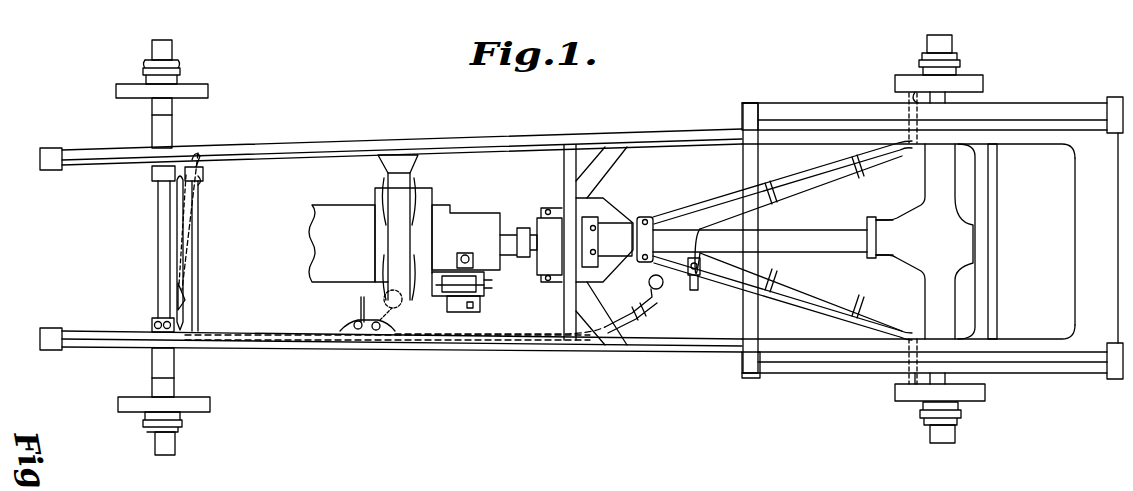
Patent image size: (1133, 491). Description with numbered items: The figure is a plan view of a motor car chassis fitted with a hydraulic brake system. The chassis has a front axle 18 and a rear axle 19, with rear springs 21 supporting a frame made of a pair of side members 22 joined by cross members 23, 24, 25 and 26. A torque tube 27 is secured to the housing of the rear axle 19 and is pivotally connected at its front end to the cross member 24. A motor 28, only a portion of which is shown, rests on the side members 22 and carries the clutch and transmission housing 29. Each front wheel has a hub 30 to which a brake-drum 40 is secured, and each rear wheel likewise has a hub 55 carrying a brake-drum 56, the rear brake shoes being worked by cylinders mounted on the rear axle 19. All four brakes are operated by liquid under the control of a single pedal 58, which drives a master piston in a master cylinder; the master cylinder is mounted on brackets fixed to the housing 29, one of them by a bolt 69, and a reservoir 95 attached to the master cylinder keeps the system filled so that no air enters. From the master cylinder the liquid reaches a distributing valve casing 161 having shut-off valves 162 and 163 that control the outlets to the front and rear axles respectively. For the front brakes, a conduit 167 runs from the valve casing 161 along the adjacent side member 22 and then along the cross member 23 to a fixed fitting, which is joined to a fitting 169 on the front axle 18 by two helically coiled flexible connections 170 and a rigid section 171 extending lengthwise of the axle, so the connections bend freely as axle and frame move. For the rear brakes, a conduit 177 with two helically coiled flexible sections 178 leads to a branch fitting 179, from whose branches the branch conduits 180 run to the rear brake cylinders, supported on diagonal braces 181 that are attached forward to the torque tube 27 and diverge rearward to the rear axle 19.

The front axle 18 is at (158, 246).
The rear axle 19 is at (925, 189).
The rear spring 21 is at (792, 104).
The side member 22 is at (503, 141).
The cross member 23 is at (199, 263).
The cross member 24 is at (564, 193).
The cross member 25 is at (997, 171).
The cross member 26 is at (1068, 268).
The torque tube 27 is at (834, 230).
The motor 28 is at (345, 206).
The clutch and transmission housing 29 is at (476, 206).
The hub 30 is at (174, 50).
The brake-drum 40 is at (209, 92).
The hub 55 is at (953, 43).
The brake-drum 56 is at (983, 80).
The pedal 58 is at (493, 286).
The bolt 69 is at (467, 253).
The reservoir 95 is at (470, 313).
The distributing valve casing 161 is at (356, 330).
The shut-off valve 162 is at (355, 322).
The shut-off valve 163 is at (378, 331).
The conduit 167 is at (177, 212).
The fitting 169 is at (153, 322).
The flexible, helically-coiled connection 170 is at (202, 190).
The rigid section 171 is at (198, 238).
The conduit 177 is at (498, 342).
The flexible section 178 is at (590, 330).
The branch fitting 179 is at (693, 276).
The branch conduit 180 is at (812, 180).
The diagonal brace 181 is at (772, 178).